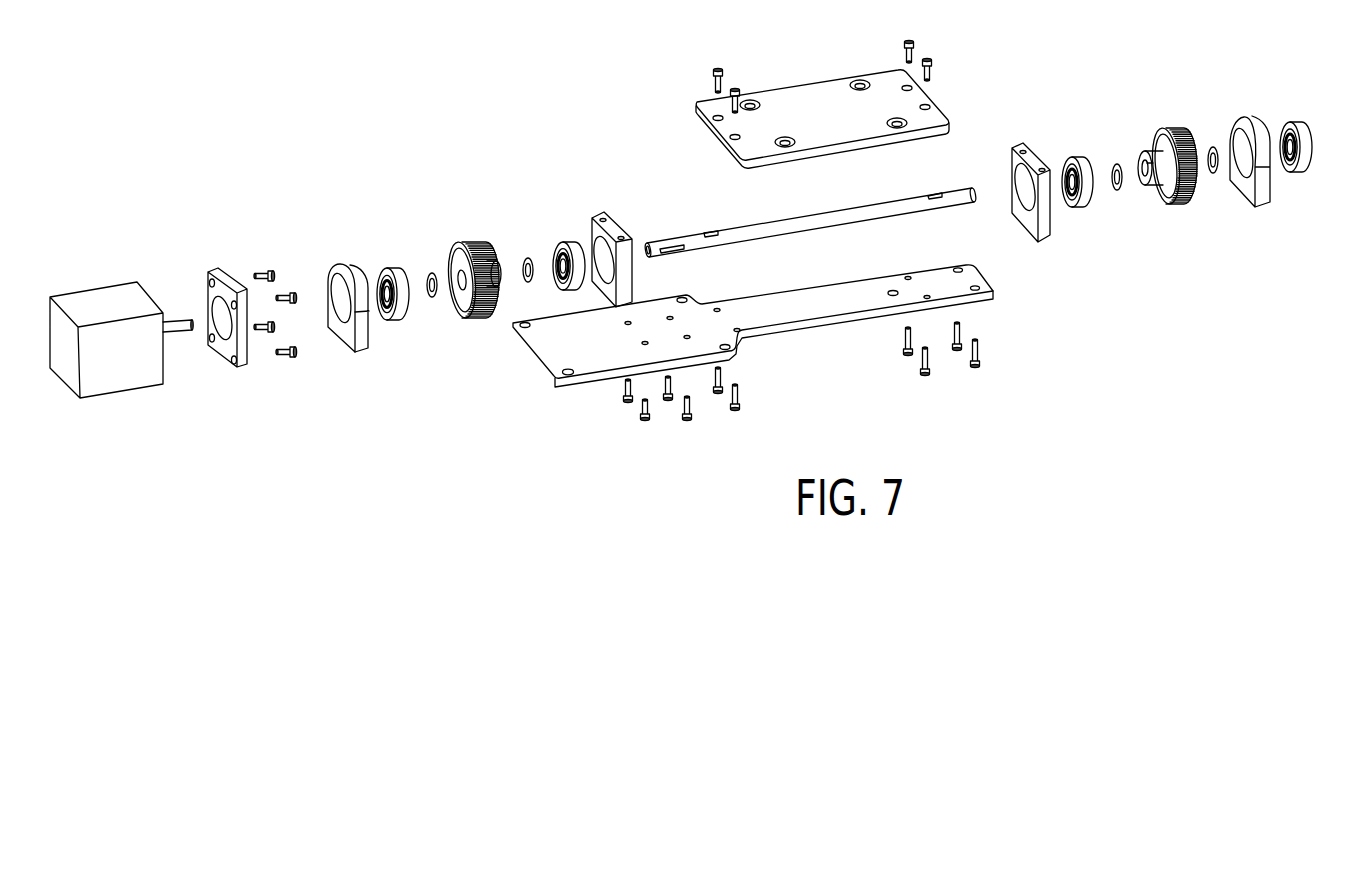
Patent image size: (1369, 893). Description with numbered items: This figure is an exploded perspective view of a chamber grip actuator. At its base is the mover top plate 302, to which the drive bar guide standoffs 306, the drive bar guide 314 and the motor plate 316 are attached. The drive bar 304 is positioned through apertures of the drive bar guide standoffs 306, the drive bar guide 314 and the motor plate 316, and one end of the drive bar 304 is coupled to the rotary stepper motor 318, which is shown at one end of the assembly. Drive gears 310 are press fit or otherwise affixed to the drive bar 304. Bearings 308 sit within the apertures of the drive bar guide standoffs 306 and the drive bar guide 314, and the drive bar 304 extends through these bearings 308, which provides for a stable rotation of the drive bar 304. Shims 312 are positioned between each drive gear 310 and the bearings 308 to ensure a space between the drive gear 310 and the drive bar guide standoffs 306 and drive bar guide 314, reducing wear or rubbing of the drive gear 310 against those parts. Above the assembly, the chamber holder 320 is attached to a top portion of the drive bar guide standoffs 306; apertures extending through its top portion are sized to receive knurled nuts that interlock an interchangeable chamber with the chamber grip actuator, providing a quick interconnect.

The mover top plate 302 is at (548, 343).
The drive bar 304 is at (847, 223).
The drive bar guide standoffs 306 is at (600, 215).
The bearings 308 is at (393, 268).
The drive gears 310 is at (468, 243).
The shims 312 is at (430, 298).
The drive bar guide 314 is at (347, 332).
The motor plate 316 is at (217, 348).
The rotary stepper motor 318 is at (123, 380).
The chamber holder 320 is at (803, 92).